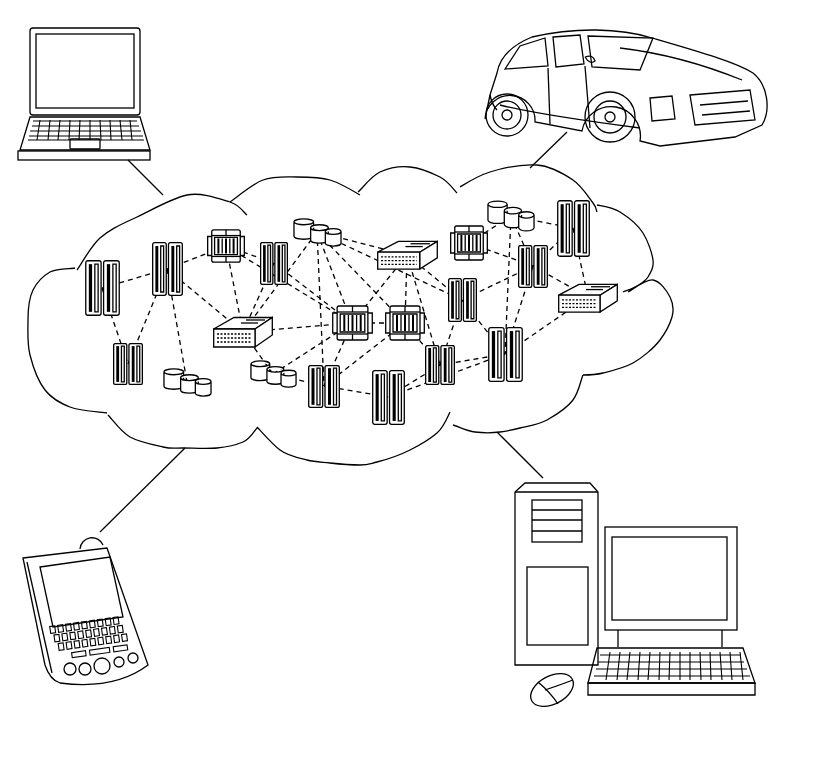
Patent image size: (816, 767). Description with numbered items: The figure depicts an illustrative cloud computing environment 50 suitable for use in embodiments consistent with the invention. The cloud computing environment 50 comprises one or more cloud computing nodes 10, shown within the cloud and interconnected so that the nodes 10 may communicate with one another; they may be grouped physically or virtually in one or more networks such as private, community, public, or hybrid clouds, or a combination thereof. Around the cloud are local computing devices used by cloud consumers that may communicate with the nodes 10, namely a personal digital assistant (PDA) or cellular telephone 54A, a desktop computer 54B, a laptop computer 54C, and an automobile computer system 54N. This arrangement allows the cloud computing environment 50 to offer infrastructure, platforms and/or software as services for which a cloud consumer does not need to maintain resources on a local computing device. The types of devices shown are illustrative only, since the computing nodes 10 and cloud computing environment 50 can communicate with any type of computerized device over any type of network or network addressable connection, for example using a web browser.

The cloud computing nodes 10 is at (632, 347).
The cloud computing environment 50 is at (670, 295).
The personal digital assistant (PDA) or cellular telephone 54A is at (133, 603).
The desktop computer 54B is at (665, 523).
The laptop computer 54C is at (141, 77).
The automobile computer system 54N is at (491, 88).